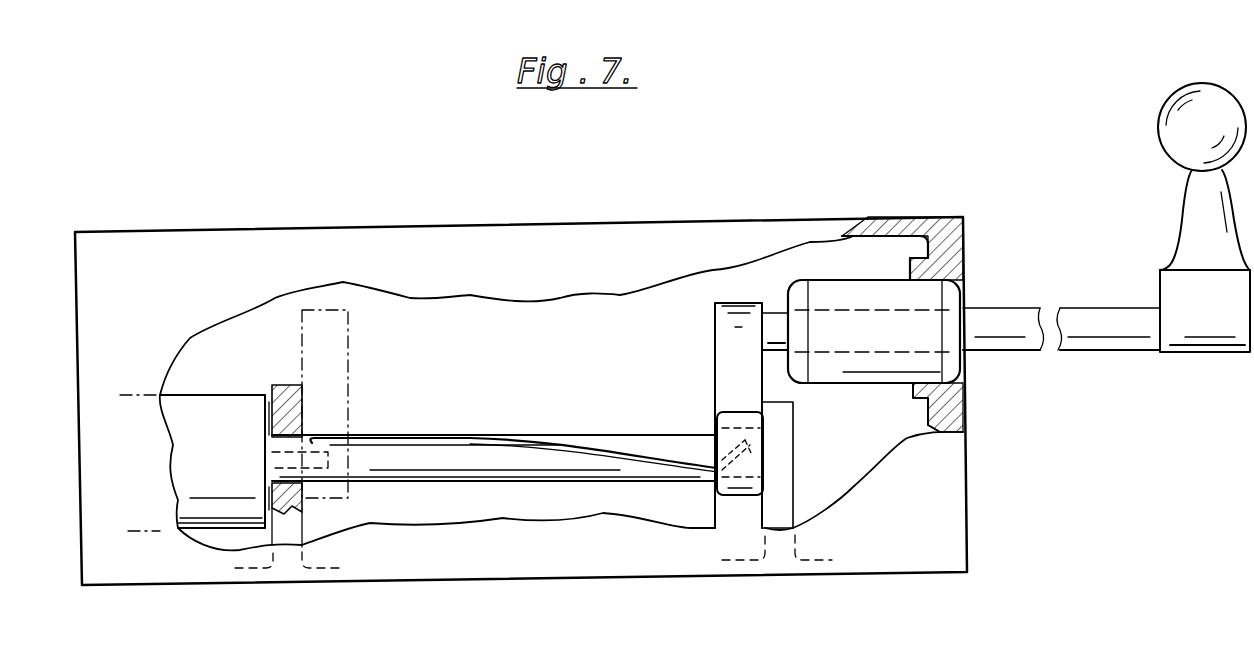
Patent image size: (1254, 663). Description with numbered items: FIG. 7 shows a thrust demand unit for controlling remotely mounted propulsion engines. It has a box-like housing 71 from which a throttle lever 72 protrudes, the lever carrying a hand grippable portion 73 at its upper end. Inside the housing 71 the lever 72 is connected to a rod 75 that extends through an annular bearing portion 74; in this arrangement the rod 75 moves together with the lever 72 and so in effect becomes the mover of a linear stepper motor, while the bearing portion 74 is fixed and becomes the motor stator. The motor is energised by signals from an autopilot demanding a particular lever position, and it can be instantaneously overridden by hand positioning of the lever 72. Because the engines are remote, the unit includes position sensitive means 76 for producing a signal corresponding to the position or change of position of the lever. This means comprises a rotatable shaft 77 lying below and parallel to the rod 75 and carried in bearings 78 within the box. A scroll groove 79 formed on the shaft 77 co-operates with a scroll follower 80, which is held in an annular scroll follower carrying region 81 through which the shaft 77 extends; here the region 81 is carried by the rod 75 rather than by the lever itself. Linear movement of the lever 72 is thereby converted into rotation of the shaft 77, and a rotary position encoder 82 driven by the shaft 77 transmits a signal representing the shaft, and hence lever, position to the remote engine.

The box-like housing 71 is at (727, 220).
The throttle lever 72 is at (1170, 197).
The hand grippable portion 73 is at (1160, 120).
The annular bearing portion 74 is at (878, 290).
The rod 75 is at (1036, 318).
The position sensitive means 76 is at (512, 353).
The rotatable shaft 77 is at (450, 458).
The bearings 78 is at (300, 527).
The scroll groove 79 is at (528, 445).
The scroll follower 80 is at (712, 466).
The annular scroll follower carrying region 81 is at (715, 366).
The rotary position encoder 82 is at (231, 400).